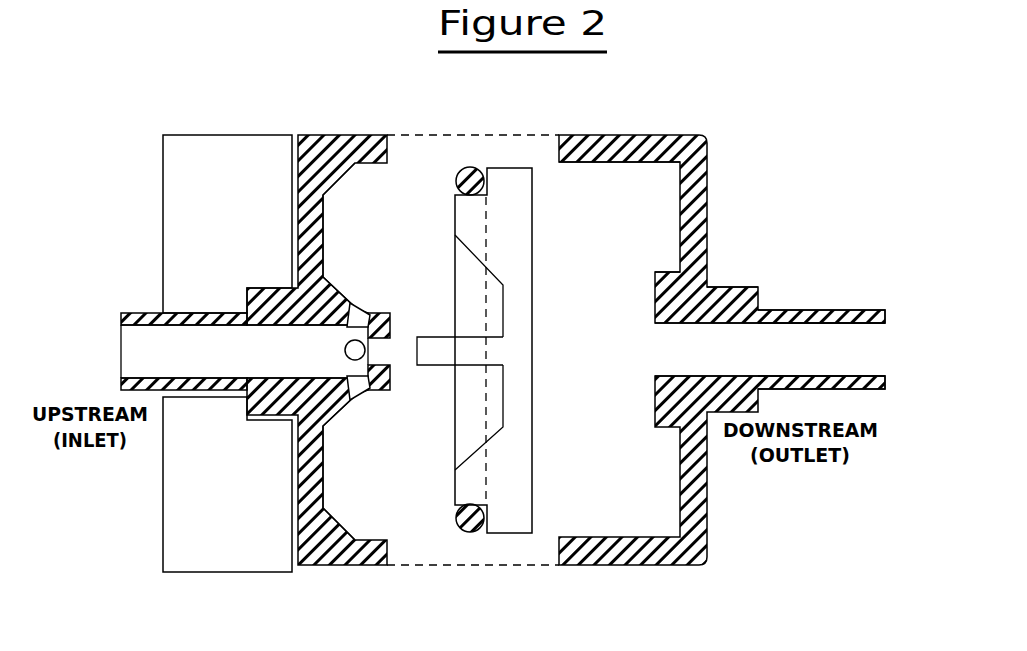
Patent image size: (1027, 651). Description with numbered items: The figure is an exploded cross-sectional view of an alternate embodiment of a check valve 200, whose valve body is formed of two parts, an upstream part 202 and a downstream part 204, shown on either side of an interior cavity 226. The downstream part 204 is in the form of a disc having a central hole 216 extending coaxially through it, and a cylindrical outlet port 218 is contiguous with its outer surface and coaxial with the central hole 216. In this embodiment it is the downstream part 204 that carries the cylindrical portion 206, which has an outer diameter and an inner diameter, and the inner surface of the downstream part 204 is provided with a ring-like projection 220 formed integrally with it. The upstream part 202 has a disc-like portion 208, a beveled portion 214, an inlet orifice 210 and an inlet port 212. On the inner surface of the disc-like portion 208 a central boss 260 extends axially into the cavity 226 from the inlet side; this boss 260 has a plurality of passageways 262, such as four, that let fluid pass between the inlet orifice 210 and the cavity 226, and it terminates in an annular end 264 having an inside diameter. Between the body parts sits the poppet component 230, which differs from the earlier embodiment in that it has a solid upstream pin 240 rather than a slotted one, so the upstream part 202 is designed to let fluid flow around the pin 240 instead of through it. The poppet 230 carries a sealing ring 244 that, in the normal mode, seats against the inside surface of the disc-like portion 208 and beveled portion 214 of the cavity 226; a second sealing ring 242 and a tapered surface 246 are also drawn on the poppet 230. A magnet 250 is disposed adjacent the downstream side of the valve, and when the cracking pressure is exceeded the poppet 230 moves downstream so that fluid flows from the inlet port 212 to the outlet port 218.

The check valve 200 is at (420, 106).
The upstream part 202 is at (353, 125).
The downstream part 204 is at (654, 125).
The cylindrical portion 206 is at (583, 163).
The disc-like portion 208 is at (327, 242).
The inlet orifice 210 is at (281, 327).
The inlet port 212 is at (138, 312).
The beveled portion 214 is at (345, 532).
The central hole 216 is at (677, 324).
The outlet port 218 is at (758, 310).
The ring-like projection 220 is at (705, 287).
The cavity 226 is at (423, 476).
The poppet component 230 is at (533, 258).
The upstream pin 240 is at (418, 366).
The seal ring 242 is at (488, 200).
The sealing ring 244 is at (474, 165).
The tapered surface 246 is at (463, 266).
The magnet 250 is at (250, 178).
The central boss 260 is at (346, 280).
The passageways 262 is at (372, 315).
The annular end 264 is at (415, 308).